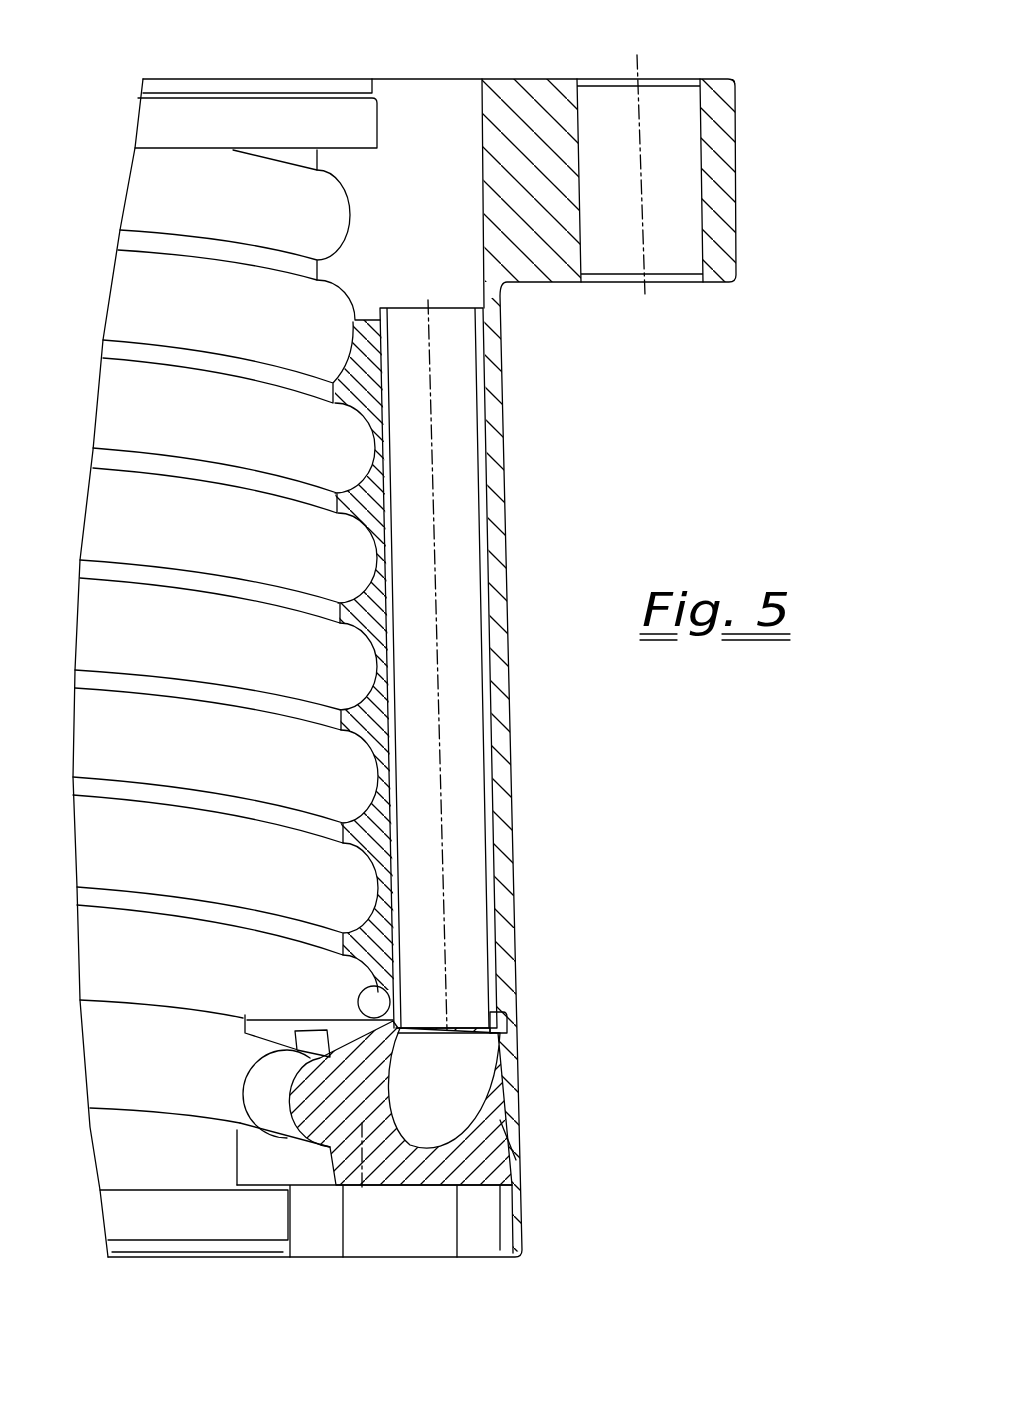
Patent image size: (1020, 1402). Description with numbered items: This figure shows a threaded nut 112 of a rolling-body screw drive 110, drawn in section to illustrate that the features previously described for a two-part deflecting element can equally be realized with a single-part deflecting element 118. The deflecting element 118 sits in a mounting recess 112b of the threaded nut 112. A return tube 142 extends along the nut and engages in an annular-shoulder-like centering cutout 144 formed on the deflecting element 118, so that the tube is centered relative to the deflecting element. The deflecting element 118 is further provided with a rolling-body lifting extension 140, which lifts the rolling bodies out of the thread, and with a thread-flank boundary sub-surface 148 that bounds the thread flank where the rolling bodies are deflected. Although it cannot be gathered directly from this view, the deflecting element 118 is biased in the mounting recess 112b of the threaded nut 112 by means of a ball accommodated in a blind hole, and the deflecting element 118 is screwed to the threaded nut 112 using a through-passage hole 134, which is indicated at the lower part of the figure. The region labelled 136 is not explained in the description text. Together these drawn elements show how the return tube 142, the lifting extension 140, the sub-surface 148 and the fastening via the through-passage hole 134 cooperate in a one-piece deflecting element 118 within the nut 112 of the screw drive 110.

The rolling-body screw drive 110 is at (777, 314).
The threaded nut 112 is at (540, 96).
The mounting recess 112b is at (522, 1205).
The single-part deflecting element 118 is at (520, 1128).
The through-passage hole 134 is at (343, 1185).
The seat bore 136 is at (520, 1098).
The rolling-body lifting extension 140 is at (270, 1092).
The return tube 142 is at (485, 500).
The annular-shoulder-like centering cutout 144 is at (505, 1002).
The thread-flank boundary sub-surface 148 is at (386, 990).